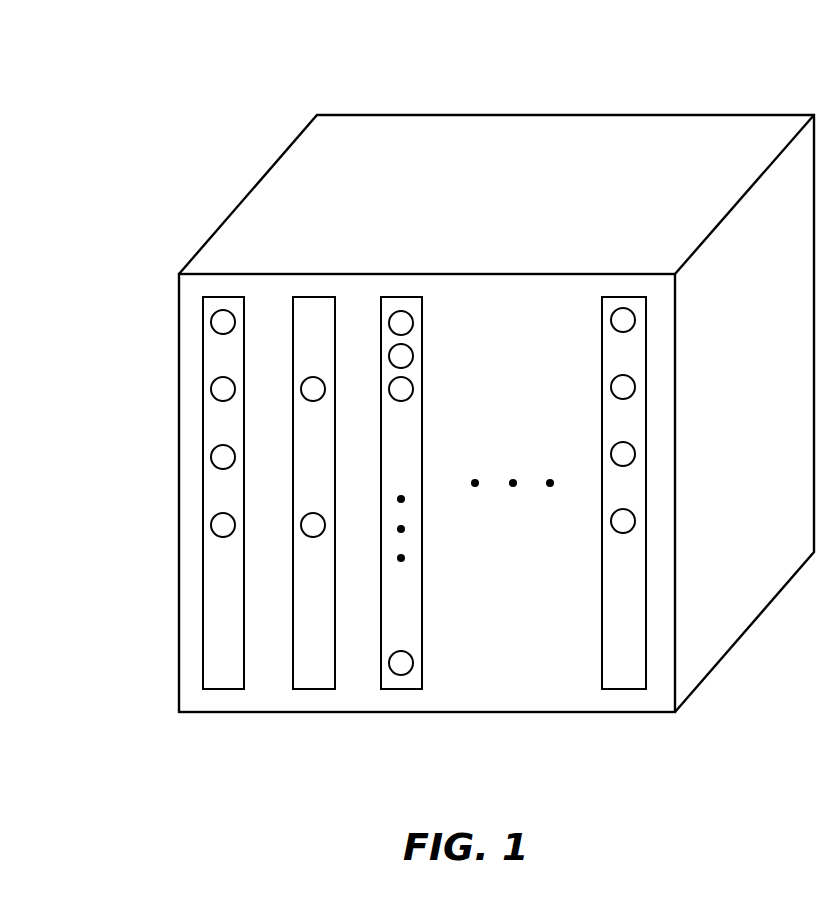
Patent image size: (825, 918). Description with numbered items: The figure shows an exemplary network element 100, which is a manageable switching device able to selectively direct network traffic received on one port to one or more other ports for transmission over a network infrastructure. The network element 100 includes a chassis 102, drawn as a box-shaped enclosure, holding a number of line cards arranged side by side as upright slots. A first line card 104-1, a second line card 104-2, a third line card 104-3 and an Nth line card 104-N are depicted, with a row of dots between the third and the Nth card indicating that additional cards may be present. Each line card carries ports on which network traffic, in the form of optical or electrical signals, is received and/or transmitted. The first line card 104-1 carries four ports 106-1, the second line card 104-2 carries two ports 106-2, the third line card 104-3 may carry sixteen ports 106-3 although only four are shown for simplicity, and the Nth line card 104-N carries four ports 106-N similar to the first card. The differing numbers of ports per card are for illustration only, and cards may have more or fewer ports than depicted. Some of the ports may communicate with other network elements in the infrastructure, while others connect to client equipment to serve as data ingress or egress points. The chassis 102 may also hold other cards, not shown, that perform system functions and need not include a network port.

The network element 100 is at (224, 86).
The chassis 102 is at (437, 140).
The first line card 104-1 is at (202, 623).
The second line card 104-2 is at (315, 690).
The third line card 104-3 is at (423, 596).
The Nth line card 104-N is at (622, 690).
The ports of first line card 106-1 is at (223, 322).
The ports of second line card 106-2 is at (313, 380).
The ports of third line card 106-3 is at (401, 323).
The ports of Nth line card 106-N is at (623, 320).